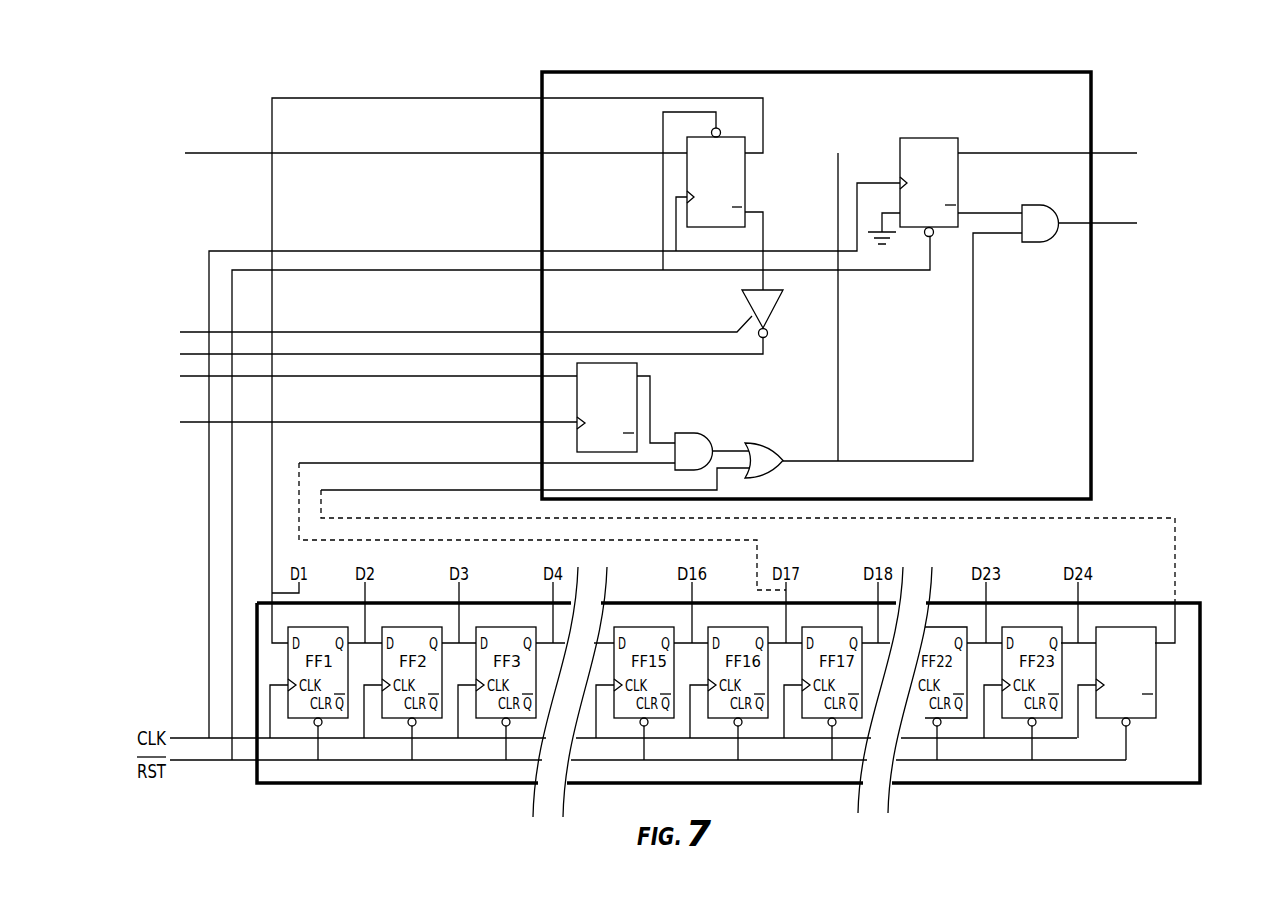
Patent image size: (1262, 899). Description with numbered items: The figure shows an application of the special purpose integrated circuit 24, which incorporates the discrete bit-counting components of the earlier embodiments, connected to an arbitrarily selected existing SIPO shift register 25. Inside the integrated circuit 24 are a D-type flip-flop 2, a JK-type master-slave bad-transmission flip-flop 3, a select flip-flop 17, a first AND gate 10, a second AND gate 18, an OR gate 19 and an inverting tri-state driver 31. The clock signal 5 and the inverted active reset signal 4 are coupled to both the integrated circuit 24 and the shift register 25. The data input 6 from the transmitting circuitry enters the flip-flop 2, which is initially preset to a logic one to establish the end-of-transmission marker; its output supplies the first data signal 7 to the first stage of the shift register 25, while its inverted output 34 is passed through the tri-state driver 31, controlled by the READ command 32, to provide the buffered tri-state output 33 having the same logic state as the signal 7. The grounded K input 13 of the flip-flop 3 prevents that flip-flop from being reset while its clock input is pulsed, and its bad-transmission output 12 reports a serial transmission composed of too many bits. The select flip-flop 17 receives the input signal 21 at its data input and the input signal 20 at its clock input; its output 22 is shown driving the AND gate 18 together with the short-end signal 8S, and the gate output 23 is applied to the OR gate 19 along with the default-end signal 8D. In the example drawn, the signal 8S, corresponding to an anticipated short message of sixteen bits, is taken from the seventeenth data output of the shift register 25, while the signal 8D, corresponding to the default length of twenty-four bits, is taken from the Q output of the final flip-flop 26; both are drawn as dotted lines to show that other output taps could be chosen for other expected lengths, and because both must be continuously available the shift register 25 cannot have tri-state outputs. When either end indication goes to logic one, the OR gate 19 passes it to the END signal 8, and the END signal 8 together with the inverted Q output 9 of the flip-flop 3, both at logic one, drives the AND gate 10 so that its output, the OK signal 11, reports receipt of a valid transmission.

The D-type flip-flop FF0 2 is at (750, 189).
The JK-type master-slave Bad Transmission flip-flop FFBT 3 is at (927, 135).
The inverted active reset signal RST 4 is at (518, 280).
The clock signal CLK 5 is at (520, 246).
The data input DATA 6 is at (520, 160).
The D1 signal 7 is at (520, 103).
The END signal 8 is at (862, 467).
The input signal ENDS 8S is at (372, 458).
The input signal ENDD 8D is at (478, 490).
The OK control signal 9 is at (977, 204).
The AND gate G1 10 is at (1030, 203).
The OK signal 11 is at (1113, 218).
The Bad Transmission (BT) signal 12 is at (1113, 150).
The FFBT K input 13 is at (882, 204).
The D-type flip-flop FFSEL 17 is at (574, 447).
The AND gate G2 18 is at (678, 431).
The OR gate G3 19 is at (775, 441).
The input signal SEL 20 is at (473, 426).
The input signal SHRT 21 is at (504, 380).
The FFSEL output line 22 is at (653, 382).
The gate G2 output line 23 is at (722, 445).
The special purpose integrated circuit 24 is at (839, 68).
The SIPO shift register 25 is at (736, 789).
The flip-flop FF24 26 is at (1140, 724).
The tri-state driver 31 is at (787, 305).
The READ command 32 is at (391, 326).
The D1B signal 33 is at (407, 358).
The inverted output 34 is at (768, 237).